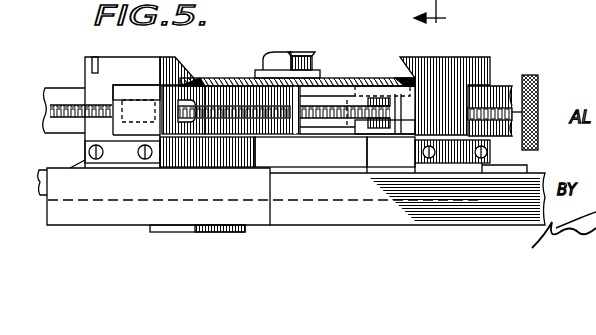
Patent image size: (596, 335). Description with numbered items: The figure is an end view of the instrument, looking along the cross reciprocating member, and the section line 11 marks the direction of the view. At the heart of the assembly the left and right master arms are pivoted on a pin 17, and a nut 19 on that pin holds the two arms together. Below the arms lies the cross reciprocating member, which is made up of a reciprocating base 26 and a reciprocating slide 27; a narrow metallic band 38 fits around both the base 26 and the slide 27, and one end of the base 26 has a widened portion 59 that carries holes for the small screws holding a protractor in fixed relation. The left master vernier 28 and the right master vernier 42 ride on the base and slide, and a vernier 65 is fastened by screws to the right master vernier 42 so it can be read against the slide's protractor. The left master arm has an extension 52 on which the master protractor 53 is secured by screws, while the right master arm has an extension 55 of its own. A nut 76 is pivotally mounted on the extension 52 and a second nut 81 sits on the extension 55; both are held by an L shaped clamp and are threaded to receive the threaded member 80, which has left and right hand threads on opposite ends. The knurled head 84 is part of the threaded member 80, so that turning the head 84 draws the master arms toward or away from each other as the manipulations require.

The section line / viewing direction arrow 11 is at (446, 13).
The pin 17 is at (293, 52).
The nut 19 is at (269, 60).
The reciprocating base 26 is at (316, 212).
The reciprocating slide 27 is at (43, 171).
The left master vernier 28 is at (100, 57).
The metallic band 38 is at (196, 232).
The right master vernier 42 is at (489, 62).
The extension 52 is at (128, 85).
The master protractor 53 is at (334, 79).
The extension 55 is at (345, 130).
The widened portion 59 is at (112, 208).
The vernier 65 is at (412, 156).
The nut 76 is at (185, 104).
The threaded member 80 is at (512, 100).
The nut 81 is at (400, 57).
The knurled head 84 is at (539, 85).